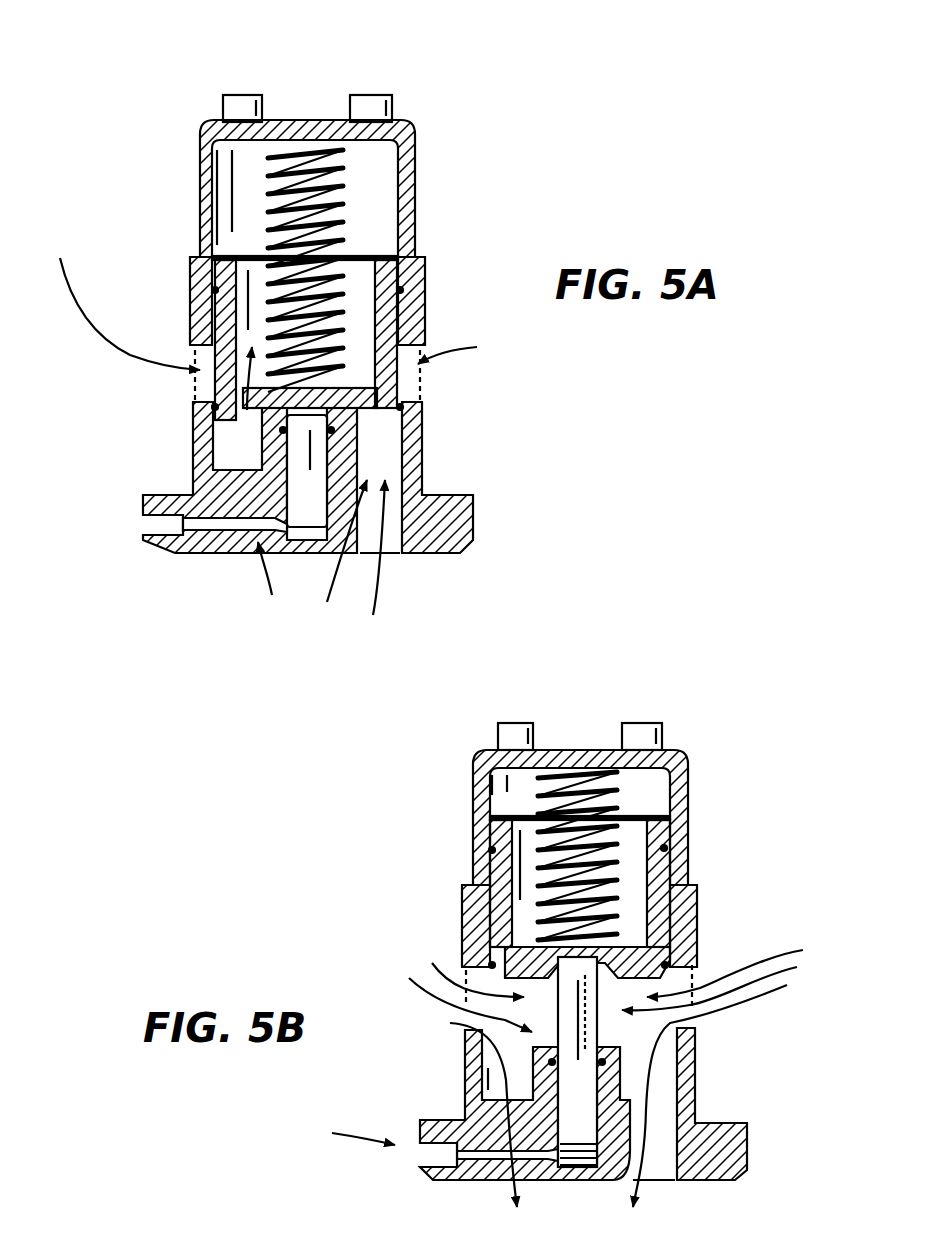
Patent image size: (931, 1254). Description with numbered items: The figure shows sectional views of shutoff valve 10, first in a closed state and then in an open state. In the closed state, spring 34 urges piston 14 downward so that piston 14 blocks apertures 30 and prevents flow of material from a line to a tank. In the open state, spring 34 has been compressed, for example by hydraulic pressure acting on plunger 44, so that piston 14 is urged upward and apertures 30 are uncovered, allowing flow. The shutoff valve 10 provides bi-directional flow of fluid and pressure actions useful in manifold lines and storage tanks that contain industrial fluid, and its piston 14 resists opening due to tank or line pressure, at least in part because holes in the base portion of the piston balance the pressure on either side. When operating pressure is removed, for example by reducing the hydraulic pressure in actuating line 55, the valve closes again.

In FIG. 5A, the shutoff valve 10 is at (183, 83).
In FIG. 5B, the shutoff valve 10 is at (670, 687).
In FIG. 5A, the piston 14 is at (193, 354).
In FIG. 5B, the piston 14 is at (463, 917).
In FIG. 5A, the apertures 30 is at (193, 386).
In FIG. 5B, the apertures 30 is at (692, 963).
In FIG. 5A, the spring 34 is at (268, 193).
In FIG. 5B, the spring 34 is at (628, 809).
In FIG. 5A, the plunger 44 is at (232, 452).
In FIG. 5B, the plunger 44 is at (690, 1032).
In FIG. 5B, the actuating line 55 is at (418, 1162).